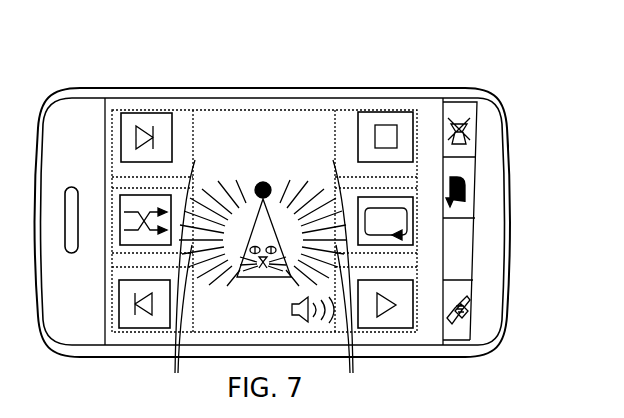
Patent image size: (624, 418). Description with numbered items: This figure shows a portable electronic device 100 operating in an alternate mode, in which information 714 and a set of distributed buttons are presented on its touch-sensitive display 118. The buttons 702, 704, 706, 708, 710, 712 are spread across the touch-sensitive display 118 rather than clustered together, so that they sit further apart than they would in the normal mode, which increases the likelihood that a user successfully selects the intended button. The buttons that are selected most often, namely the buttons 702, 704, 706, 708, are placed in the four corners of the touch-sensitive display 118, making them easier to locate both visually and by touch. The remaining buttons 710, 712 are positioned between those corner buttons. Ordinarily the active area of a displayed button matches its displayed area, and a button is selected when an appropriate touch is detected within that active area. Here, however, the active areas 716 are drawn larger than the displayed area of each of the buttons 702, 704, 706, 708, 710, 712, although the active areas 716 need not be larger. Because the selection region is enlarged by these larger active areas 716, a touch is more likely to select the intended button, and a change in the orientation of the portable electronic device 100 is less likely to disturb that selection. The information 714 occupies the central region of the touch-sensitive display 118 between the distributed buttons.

The portable electronic device 100 is at (88, 80).
The touch-sensitive display 118 is at (210, 117).
The button 702 is at (125, 323).
The button 704 is at (405, 323).
The button 706 is at (402, 120).
The button 708 is at (163, 123).
The button 710 is at (363, 197).
The button 712 is at (122, 200).
The information 714 is at (308, 120).
The active areas 716 is at (267, 282).